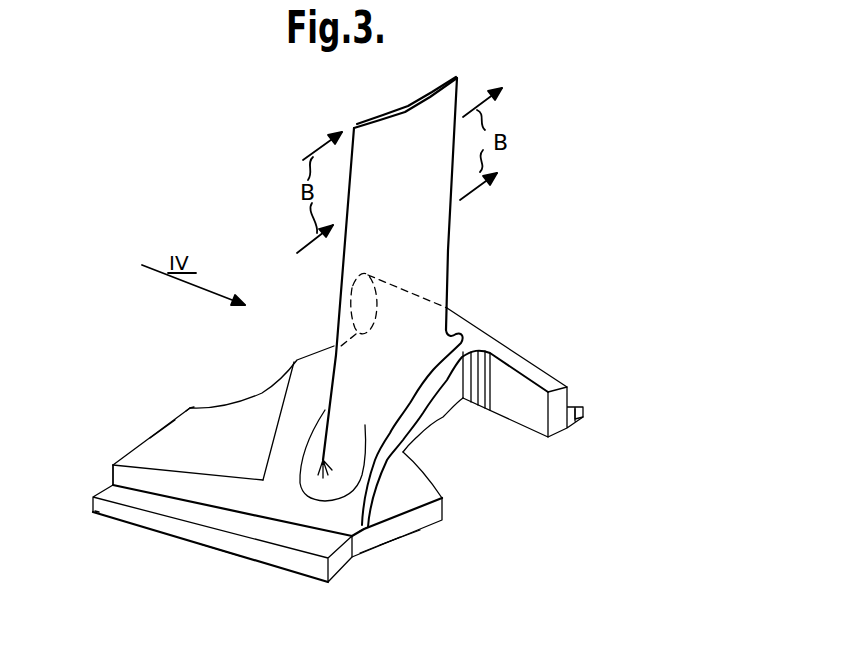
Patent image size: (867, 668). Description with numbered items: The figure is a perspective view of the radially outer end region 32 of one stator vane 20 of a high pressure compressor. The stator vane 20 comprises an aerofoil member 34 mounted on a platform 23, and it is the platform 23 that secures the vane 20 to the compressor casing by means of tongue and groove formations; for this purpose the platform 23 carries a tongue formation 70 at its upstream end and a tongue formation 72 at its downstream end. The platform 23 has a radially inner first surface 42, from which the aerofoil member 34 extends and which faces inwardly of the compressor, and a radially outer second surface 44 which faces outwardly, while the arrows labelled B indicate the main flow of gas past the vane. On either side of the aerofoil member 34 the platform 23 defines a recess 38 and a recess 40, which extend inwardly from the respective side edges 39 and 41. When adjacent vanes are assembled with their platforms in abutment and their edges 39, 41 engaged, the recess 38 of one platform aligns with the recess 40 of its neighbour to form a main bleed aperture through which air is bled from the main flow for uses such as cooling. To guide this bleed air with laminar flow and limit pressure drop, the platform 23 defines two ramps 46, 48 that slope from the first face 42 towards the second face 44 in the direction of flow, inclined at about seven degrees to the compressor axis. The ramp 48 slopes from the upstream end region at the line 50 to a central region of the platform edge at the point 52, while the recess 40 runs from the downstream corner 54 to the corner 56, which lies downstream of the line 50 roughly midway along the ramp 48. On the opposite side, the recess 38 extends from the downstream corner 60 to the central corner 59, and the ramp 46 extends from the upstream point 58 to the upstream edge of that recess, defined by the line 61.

The stator vane 20 is at (563, 273).
The platform 23 is at (378, 553).
The radially outer end region 32 is at (133, 549).
The aerofoil member 34 is at (397, 128).
The recess 38 is at (505, 393).
The side edge 39 is at (417, 520).
The recess 40 is at (312, 355).
The side edge 41 is at (175, 415).
The radially inner first surface 42 is at (133, 461).
The radially outer second surface 44 is at (355, 574).
The ramp 46 is at (397, 487).
The ramp 48 is at (163, 443).
The line 50 is at (137, 444).
The point 52 is at (293, 362).
The corner 54 is at (348, 302).
The corner 56 is at (190, 408).
The point 58 is at (368, 530).
The corner 59 is at (445, 508).
The corner 60 is at (557, 429).
The line 61 is at (440, 487).
The tongue formation 70 is at (248, 558).
The tongue formation 72 is at (572, 403).